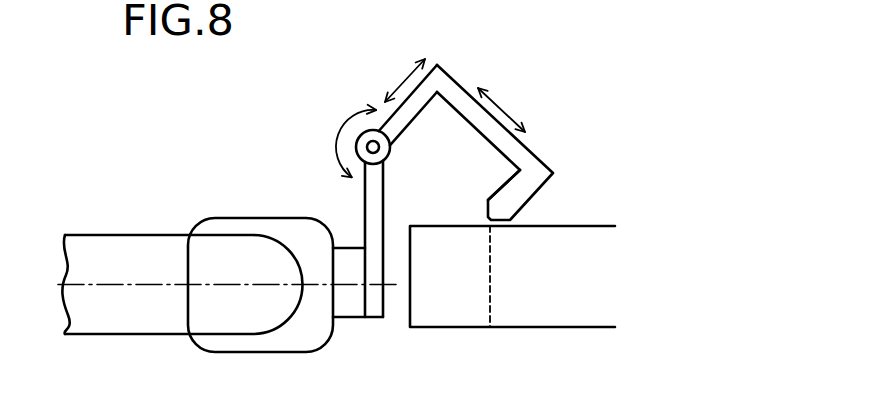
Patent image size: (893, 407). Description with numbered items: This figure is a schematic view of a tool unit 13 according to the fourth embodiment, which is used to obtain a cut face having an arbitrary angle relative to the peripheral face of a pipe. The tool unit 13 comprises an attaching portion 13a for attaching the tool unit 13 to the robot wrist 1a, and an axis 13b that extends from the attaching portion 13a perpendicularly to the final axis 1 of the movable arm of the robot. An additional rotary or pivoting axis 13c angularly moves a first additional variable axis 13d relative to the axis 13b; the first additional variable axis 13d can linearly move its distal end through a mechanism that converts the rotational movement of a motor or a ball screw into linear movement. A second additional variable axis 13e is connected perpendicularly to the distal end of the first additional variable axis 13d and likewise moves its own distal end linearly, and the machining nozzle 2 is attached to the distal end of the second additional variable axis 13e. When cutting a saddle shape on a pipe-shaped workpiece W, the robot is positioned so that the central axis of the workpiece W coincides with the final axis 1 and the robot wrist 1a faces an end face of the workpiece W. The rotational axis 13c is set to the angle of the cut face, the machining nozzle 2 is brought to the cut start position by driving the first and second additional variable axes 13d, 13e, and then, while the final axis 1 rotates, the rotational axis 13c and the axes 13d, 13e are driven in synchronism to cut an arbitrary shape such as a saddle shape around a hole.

The final axis of the movable arm of the robot 1 is at (155, 283).
The robot wrist 1a is at (272, 228).
The machining nozzle 2 is at (515, 203).
The tool unit 13 is at (519, 89).
The attaching portion 13a is at (348, 306).
The axis 13b is at (374, 203).
The additional rotary or pivoting axis 13c is at (358, 136).
The first additional variable axis 13d is at (404, 117).
The second additional variable axis 13e is at (520, 152).
The workpiece W is at (550, 312).